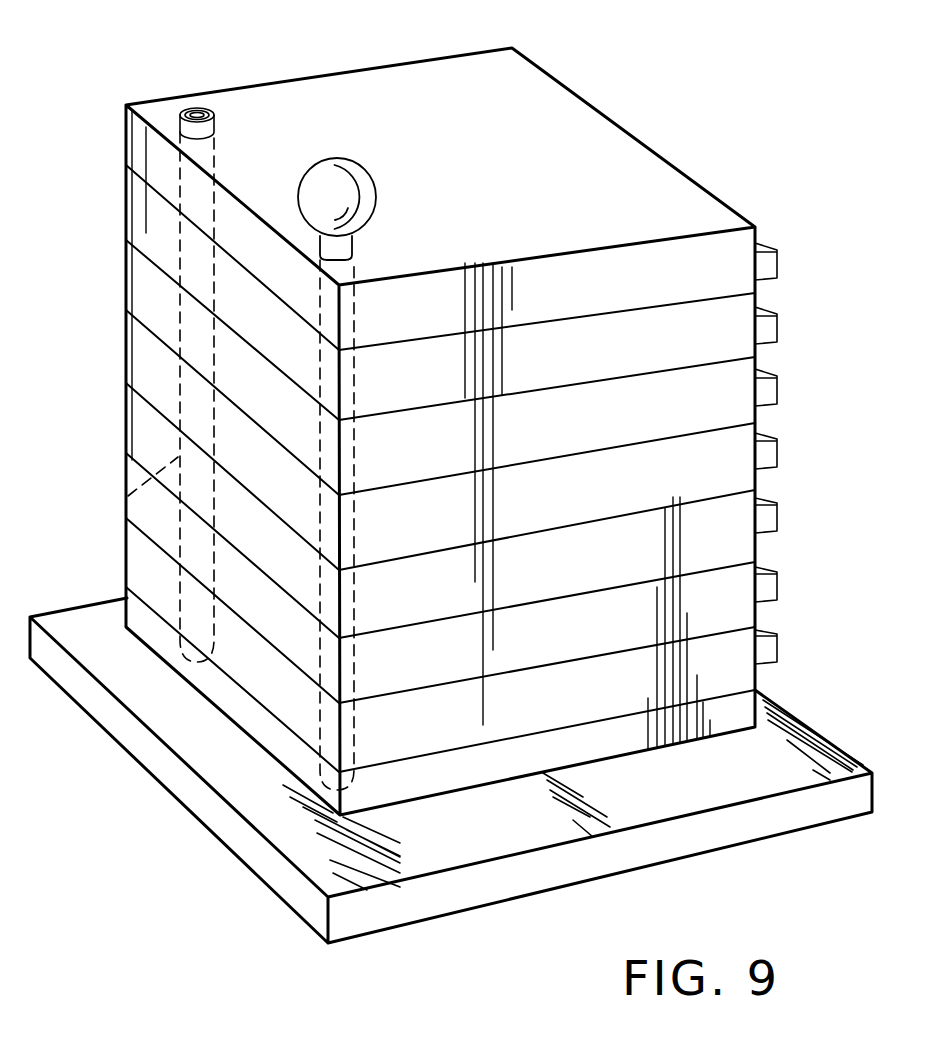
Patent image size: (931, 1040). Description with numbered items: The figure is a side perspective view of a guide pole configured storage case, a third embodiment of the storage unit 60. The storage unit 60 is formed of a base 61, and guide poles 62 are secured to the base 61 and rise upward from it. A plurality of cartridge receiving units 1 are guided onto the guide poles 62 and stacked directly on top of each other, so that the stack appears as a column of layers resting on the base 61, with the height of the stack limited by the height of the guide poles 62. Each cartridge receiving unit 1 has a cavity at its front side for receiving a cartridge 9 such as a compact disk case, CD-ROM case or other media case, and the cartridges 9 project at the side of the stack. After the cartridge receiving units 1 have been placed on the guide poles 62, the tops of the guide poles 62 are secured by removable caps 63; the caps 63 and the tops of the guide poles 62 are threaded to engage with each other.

The cartridge receiving unit 1 is at (578, 353).
The cartridge 9 is at (765, 263).
The storage unit 60 is at (740, 115).
The base 61 is at (295, 853).
The guide pole 62 is at (208, 110).
The removable cap 63 is at (337, 188).